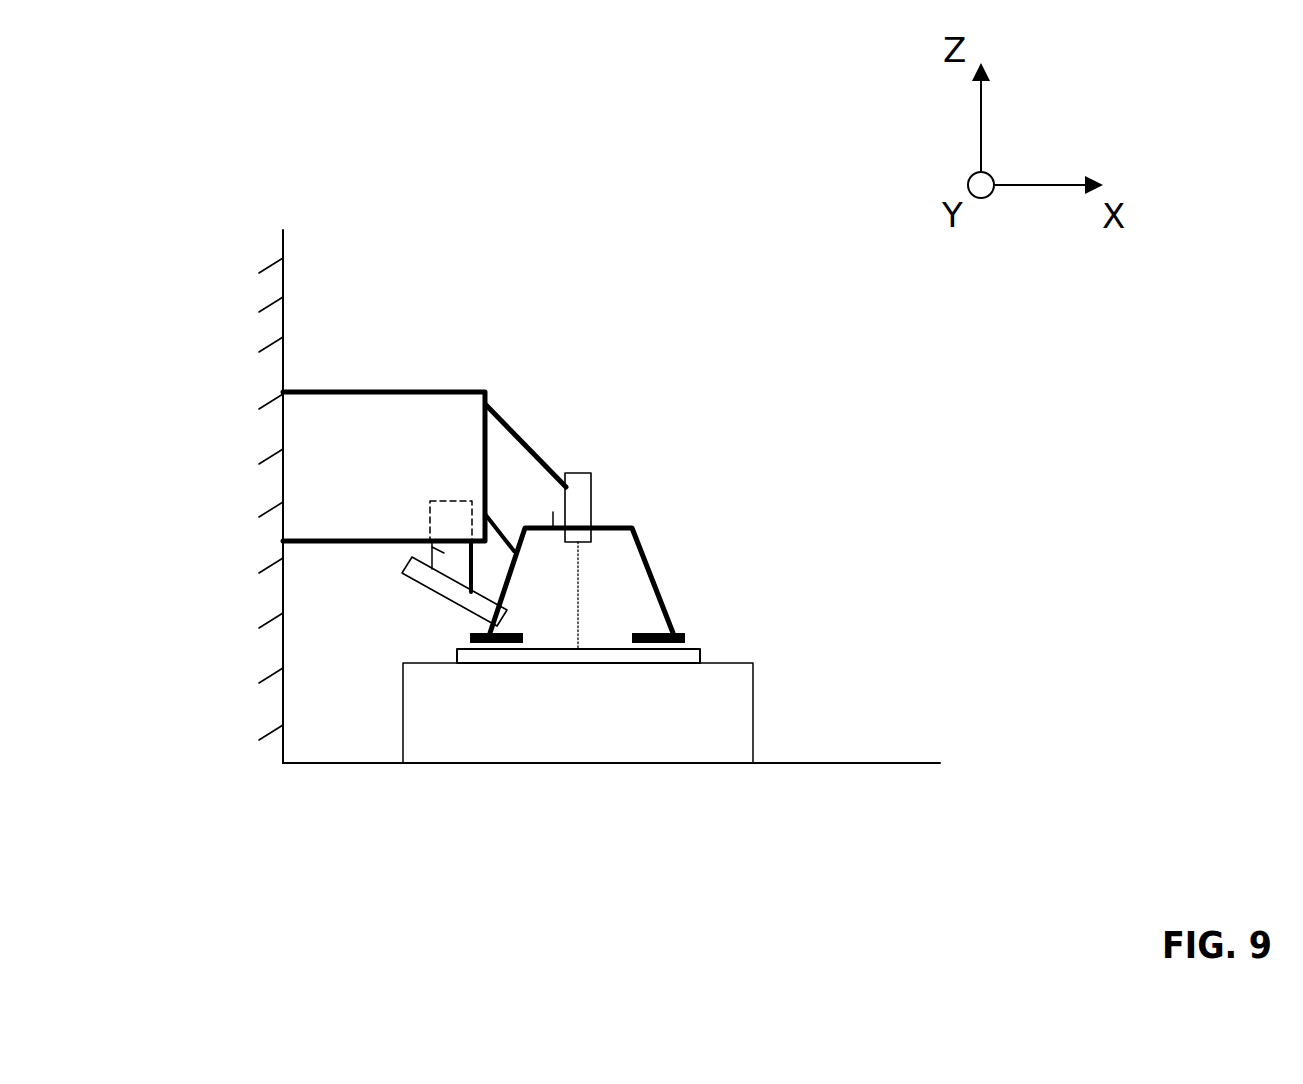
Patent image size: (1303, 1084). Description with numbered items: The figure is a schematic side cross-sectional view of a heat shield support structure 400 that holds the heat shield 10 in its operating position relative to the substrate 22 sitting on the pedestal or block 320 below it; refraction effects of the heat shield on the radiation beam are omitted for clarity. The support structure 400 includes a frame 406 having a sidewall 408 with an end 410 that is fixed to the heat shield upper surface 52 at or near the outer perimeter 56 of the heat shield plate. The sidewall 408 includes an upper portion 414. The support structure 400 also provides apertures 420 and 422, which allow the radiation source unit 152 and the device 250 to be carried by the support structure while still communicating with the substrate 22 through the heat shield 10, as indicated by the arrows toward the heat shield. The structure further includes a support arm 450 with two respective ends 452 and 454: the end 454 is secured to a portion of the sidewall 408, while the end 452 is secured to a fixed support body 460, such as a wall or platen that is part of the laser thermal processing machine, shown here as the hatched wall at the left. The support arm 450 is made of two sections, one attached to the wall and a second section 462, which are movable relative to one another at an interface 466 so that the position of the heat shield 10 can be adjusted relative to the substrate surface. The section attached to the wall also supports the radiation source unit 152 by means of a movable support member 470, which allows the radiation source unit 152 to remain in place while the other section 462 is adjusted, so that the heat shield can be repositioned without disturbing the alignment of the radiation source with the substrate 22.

The heat shield support structure 400 is at (880, 400).
The fixed support body / support arm section 460 is at (283, 283).
The support arm 450 is at (420, 350).
The support arm end 452 is at (323, 447).
The movable support member 470 is at (430, 540).
The interface 466 is at (510, 473).
The support arm section 462 is at (524, 526).
The aperture 422 is at (532, 610).
The device 250 is at (580, 500).
The upper portion 414 is at (605, 527).
The frame 406 is at (655, 545).
The sidewall 408 is at (647, 582).
The aperture 420 is at (600, 566).
The outer perimeter 56 is at (470, 641).
The upper surface 52 is at (660, 633).
The sidewall end 410 is at (675, 623).
The heat shield 10 is at (686, 638).
The substrate 22 is at (700, 648).
The pedestal 320 is at (605, 731).
The support arm end 454 is at (553, 513).
The radiation source unit 152 is at (403, 568).